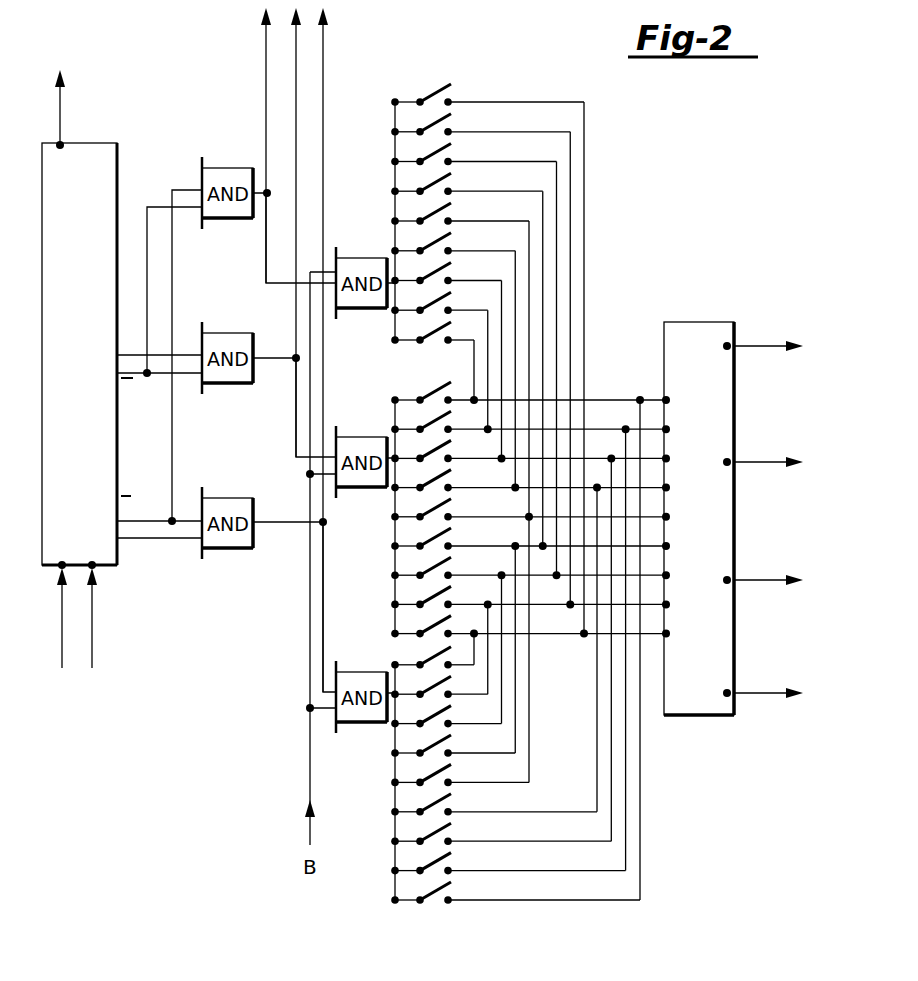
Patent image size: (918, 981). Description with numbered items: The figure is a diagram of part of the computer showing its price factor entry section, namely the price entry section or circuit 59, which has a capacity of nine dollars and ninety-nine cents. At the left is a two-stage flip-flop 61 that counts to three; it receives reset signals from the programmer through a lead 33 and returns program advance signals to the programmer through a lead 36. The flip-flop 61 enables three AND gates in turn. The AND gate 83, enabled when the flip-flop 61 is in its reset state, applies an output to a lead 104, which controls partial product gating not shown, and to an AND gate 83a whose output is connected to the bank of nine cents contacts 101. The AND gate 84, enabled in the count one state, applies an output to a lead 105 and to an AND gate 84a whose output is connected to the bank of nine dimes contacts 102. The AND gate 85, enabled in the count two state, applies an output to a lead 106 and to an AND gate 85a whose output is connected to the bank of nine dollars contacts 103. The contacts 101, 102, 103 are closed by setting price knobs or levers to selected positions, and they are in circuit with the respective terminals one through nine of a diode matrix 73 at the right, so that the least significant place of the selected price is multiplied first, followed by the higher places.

The lead 36 is at (62, 121).
The two-stage flip-flop 61 is at (100, 143).
The lead 33 is at (92, 628).
The AND gate 83 is at (213, 168).
The AND gate 84 is at (213, 333).
The AND gate 85 is at (213, 498).
The AND gate 83a is at (356, 258).
The AND gate 84a is at (356, 437).
The AND gate 85a is at (356, 672).
The lead 104 is at (265, 102).
The lead 105 is at (296, 430).
The lead 106 is at (322, 607).
The bank of cents contacts 101 is at (375, 194).
The bank of dimes contacts 102 is at (371, 530).
The bank of dollars contacts 103 is at (378, 812).
The price entry section 59 is at (595, 272).
The diode matrix 73 is at (688, 322).